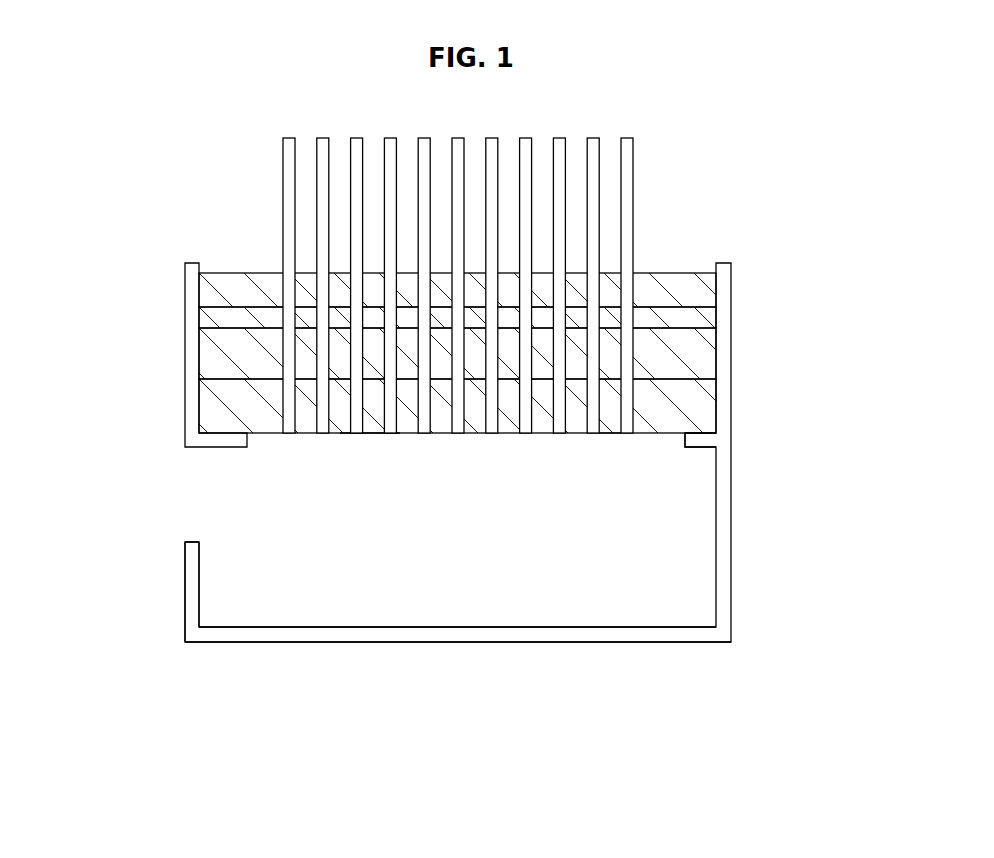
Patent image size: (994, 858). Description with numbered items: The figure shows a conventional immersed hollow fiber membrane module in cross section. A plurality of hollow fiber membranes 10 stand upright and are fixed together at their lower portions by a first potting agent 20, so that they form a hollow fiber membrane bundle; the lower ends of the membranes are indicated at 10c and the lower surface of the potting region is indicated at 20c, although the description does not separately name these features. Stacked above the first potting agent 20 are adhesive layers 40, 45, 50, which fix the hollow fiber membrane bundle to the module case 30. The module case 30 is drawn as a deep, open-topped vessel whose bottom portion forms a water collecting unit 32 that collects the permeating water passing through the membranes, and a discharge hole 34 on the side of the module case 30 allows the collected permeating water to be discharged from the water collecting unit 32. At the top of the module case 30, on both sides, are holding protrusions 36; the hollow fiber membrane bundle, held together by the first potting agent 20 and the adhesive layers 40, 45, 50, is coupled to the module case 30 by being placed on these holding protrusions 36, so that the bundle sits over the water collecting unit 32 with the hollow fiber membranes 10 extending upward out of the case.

The hollow fiber membranes 10 is at (633, 154).
The lower end of heat dissipation fin 10c is at (617, 433).
The first potting agent 20 is at (703, 403).
The lower surface of base plate 20c is at (370, 433).
The module case 30 is at (731, 563).
The water collecting unit 32 is at (567, 565).
The discharge hole 34 is at (207, 495).
The holding protrusion 36 is at (227, 440).
The adhesive layer 40 is at (710, 354).
The adhesive layer 45 is at (697, 318).
The adhesive layer 50 is at (683, 283).